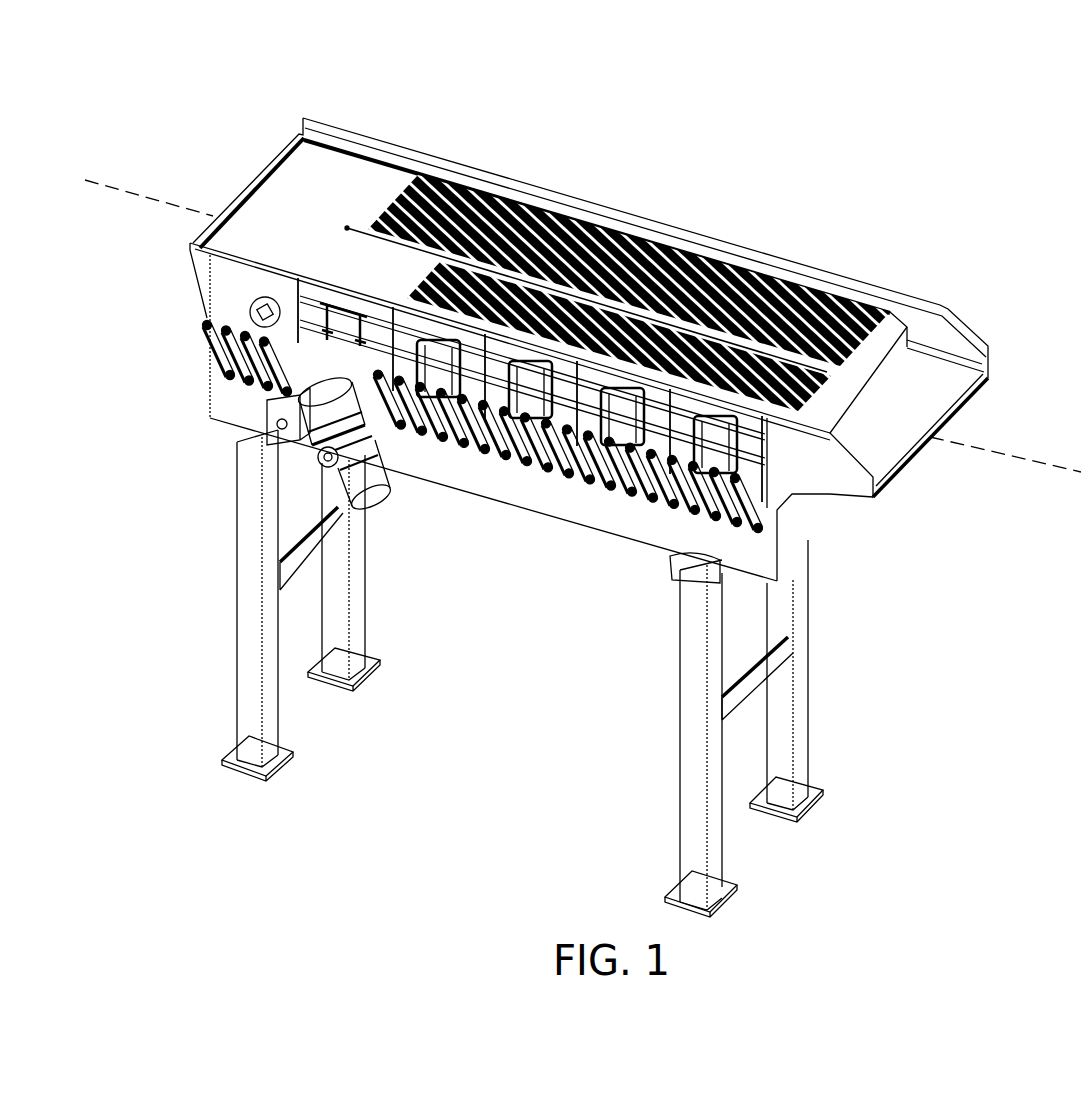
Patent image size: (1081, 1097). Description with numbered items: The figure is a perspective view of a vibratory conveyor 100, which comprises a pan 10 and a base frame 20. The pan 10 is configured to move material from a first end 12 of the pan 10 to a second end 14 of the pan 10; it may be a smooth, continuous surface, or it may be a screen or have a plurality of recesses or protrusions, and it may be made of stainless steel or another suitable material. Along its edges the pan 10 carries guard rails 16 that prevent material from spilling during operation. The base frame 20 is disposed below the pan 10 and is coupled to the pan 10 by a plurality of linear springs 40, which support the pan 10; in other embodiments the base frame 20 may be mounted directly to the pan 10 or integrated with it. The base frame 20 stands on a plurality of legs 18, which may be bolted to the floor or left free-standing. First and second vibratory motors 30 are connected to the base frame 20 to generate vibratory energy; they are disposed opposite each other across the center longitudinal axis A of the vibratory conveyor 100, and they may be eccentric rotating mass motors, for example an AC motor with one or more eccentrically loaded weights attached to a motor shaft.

The vibratory conveyor 100 is at (932, 195).
The pan 10 is at (462, 198).
The first end 12 is at (237, 200).
The second end 14 is at (962, 400).
The guard rails 16 is at (330, 134).
The legs 18 is at (360, 647).
The base frame 20 is at (227, 403).
The vibratory motors 30 is at (348, 487).
The linear springs 40 is at (455, 458).
The center longitudinal axis A is at (1018, 462).